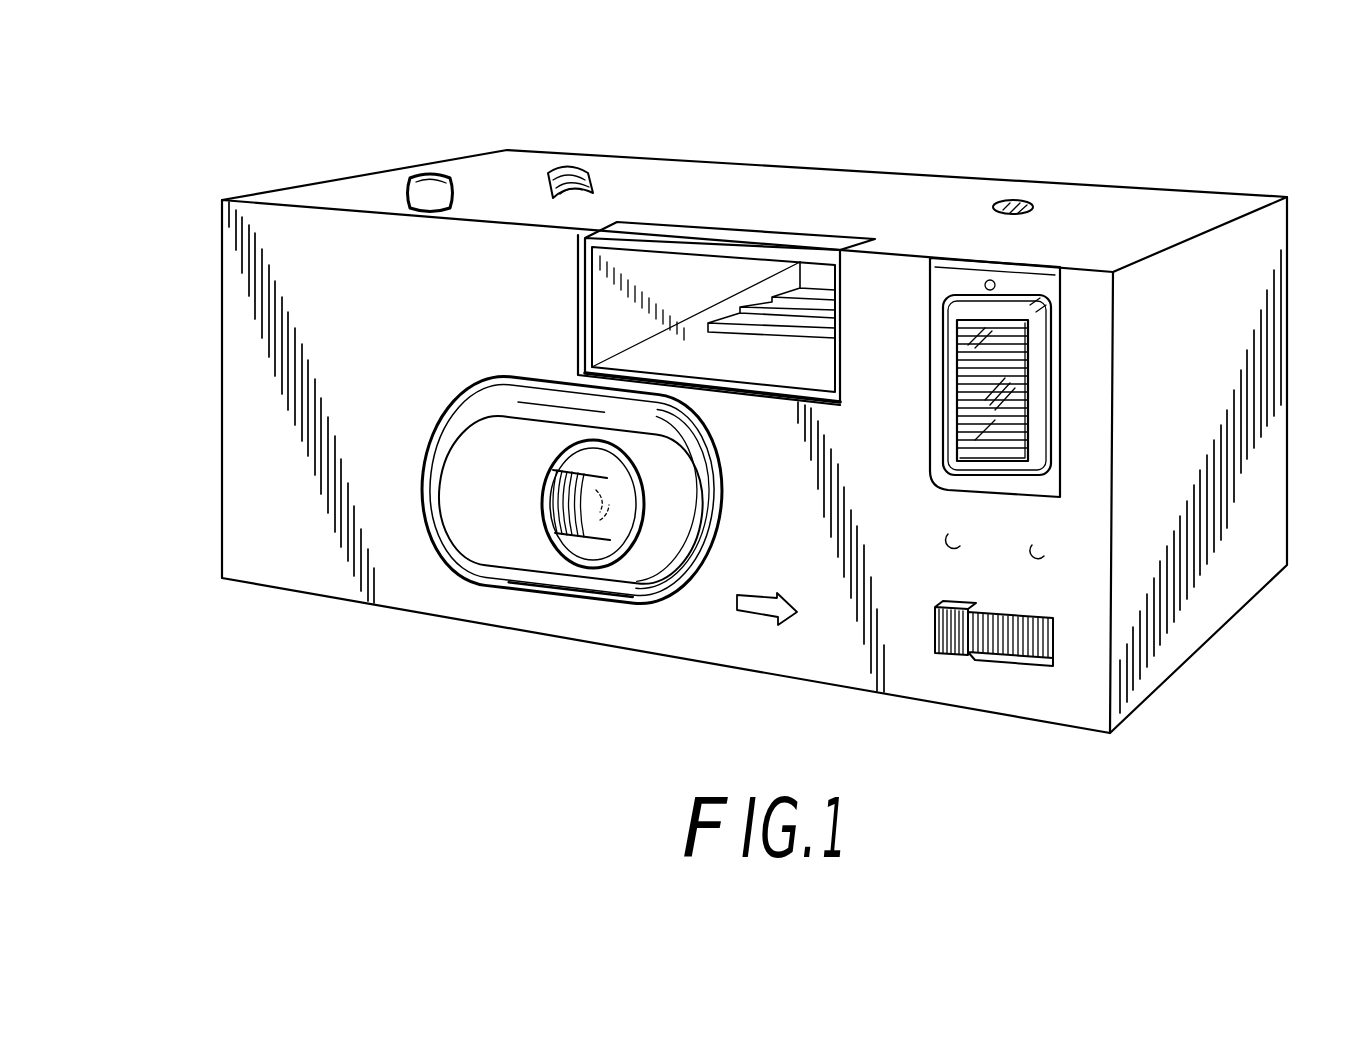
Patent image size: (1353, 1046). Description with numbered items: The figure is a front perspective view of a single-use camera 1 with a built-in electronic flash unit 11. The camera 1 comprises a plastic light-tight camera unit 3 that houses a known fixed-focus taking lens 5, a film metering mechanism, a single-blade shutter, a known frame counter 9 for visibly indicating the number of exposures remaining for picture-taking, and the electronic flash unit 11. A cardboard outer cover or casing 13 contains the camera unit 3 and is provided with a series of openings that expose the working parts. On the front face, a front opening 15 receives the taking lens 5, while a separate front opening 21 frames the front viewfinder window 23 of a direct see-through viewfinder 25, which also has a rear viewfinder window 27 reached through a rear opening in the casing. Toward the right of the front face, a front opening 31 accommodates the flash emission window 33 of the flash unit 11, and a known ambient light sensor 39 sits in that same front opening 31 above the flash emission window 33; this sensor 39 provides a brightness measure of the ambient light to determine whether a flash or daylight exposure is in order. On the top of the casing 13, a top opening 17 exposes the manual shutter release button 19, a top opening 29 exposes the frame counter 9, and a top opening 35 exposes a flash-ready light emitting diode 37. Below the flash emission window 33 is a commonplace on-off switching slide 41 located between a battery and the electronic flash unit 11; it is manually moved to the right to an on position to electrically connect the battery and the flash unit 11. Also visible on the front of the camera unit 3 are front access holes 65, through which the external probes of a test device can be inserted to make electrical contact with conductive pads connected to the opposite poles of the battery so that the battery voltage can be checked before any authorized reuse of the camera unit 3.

The single-use camera 1 is at (165, 398).
The camera unit 3 is at (708, 533).
The taking lens 5 is at (588, 499).
The frame counter 9 is at (566, 170).
The electronic flash unit 11 is at (1068, 413).
The outer cover or casing 13 is at (1197, 624).
The front opening 15 is at (458, 415).
The top opening 17 is at (442, 198).
The shutter release button 19 is at (433, 187).
The front opening 21 is at (600, 341).
The front viewfinder window 23 is at (597, 286).
The direct see-through viewfinder 25 is at (688, 272).
The rear viewfinder window 27 is at (808, 275).
The top opening 29 is at (573, 172).
The front opening 31 is at (958, 378).
The flash emission window 33 is at (972, 345).
The top opening 35 is at (1013, 198).
The flash-ready light emitting diode 37 is at (1007, 200).
The ambient light sensor 39 is at (978, 285).
The on-off switching slide 41 is at (965, 655).
The front access holes 65 is at (960, 552).